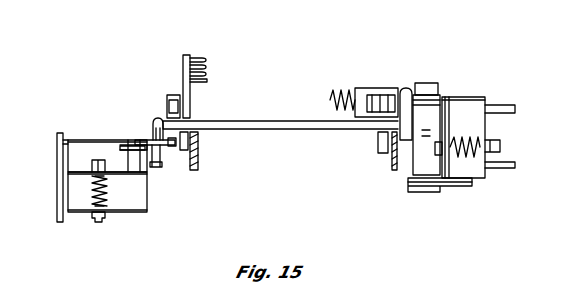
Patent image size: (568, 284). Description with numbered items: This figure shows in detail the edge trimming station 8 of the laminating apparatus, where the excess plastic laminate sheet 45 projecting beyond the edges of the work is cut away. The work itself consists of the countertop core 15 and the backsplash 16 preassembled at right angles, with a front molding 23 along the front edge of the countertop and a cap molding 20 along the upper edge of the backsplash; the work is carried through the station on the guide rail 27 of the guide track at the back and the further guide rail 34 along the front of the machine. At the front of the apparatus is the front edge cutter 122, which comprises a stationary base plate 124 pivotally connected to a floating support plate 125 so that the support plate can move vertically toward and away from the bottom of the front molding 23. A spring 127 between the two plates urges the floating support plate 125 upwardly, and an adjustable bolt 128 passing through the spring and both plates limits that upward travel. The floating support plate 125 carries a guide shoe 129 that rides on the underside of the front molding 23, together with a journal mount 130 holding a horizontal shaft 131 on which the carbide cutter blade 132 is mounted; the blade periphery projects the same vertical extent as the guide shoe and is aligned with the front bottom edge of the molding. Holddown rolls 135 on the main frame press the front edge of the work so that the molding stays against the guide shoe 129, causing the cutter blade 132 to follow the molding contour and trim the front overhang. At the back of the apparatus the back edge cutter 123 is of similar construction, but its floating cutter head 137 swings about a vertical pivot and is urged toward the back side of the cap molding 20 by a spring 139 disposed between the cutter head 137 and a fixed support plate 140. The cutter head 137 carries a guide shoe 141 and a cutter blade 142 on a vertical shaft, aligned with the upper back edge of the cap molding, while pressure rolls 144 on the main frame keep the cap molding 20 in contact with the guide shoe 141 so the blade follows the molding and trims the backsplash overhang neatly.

The edge trimming station 8 is at (175, 70).
The countertop core 15 is at (302, 129).
The backsplash 16 is at (471, 122).
The cap molding 20 is at (408, 88).
The front molding 23 is at (157, 123).
The guide rail 27 is at (393, 167).
The guide rail 34 is at (198, 157).
The plastic laminate sheet 45 is at (280, 124).
The front edge cutter 122 is at (144, 132).
The back edge cutter 123 is at (423, 78).
The stationary base plate 124 is at (78, 213).
The floating support plate 125 is at (78, 164).
The spring 127 is at (108, 198).
The adjustable bolt 128 is at (80, 143).
The guide shoe 129 is at (172, 146).
The journal mount 130 is at (100, 150).
The horizontal shaft 131 is at (137, 144).
The carbide cutter blade 132 is at (153, 167).
The holddown rolls 135 is at (177, 97).
The floating cutter head 137 is at (450, 163).
The spring 139 is at (473, 137).
The fixed support plate 140 is at (485, 100).
The guide shoe 141 is at (453, 112).
The cutter blade 142 is at (432, 92).
The pressure rolls 144 is at (377, 95).